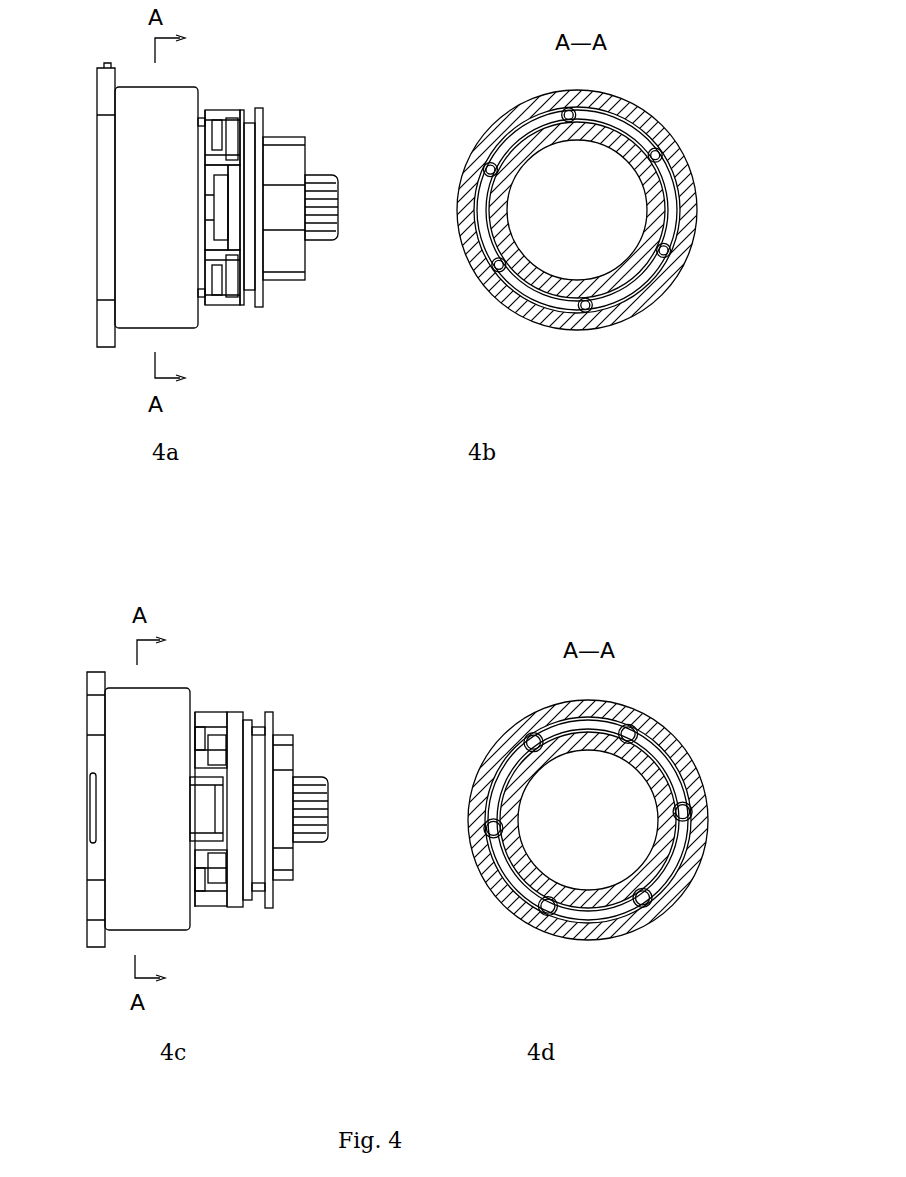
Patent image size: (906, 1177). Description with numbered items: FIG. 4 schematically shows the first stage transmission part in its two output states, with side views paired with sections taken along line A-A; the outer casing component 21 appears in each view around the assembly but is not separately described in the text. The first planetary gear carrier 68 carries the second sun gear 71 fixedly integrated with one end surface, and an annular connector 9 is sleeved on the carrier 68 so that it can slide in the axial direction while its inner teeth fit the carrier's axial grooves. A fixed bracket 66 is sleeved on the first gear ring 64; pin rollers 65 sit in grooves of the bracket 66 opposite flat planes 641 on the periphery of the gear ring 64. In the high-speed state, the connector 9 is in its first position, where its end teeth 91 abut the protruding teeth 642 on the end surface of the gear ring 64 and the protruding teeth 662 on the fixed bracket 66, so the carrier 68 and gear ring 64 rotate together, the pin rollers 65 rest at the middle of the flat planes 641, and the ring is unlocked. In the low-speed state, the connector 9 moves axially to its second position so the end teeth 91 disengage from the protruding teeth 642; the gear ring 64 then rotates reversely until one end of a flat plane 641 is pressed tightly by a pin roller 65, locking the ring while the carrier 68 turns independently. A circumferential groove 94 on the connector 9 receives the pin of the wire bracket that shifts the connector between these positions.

The motor housing 21 is at (163, 108).
The first gear ring 64 is at (213, 303).
The flat planes 641 is at (665, 245).
The protruding teeth 642 is at (225, 150).
The pin rollers 65 is at (667, 260).
The fixed bracket 66 is at (640, 116).
The protruding teeth 662 is at (224, 158).
The first planetary gear carrier 68 is at (283, 270).
The second sun gear 71 is at (322, 227).
The annular connector 9 is at (263, 303).
The end teeth 91 is at (223, 185).
The circumferential groove 94 is at (248, 300).